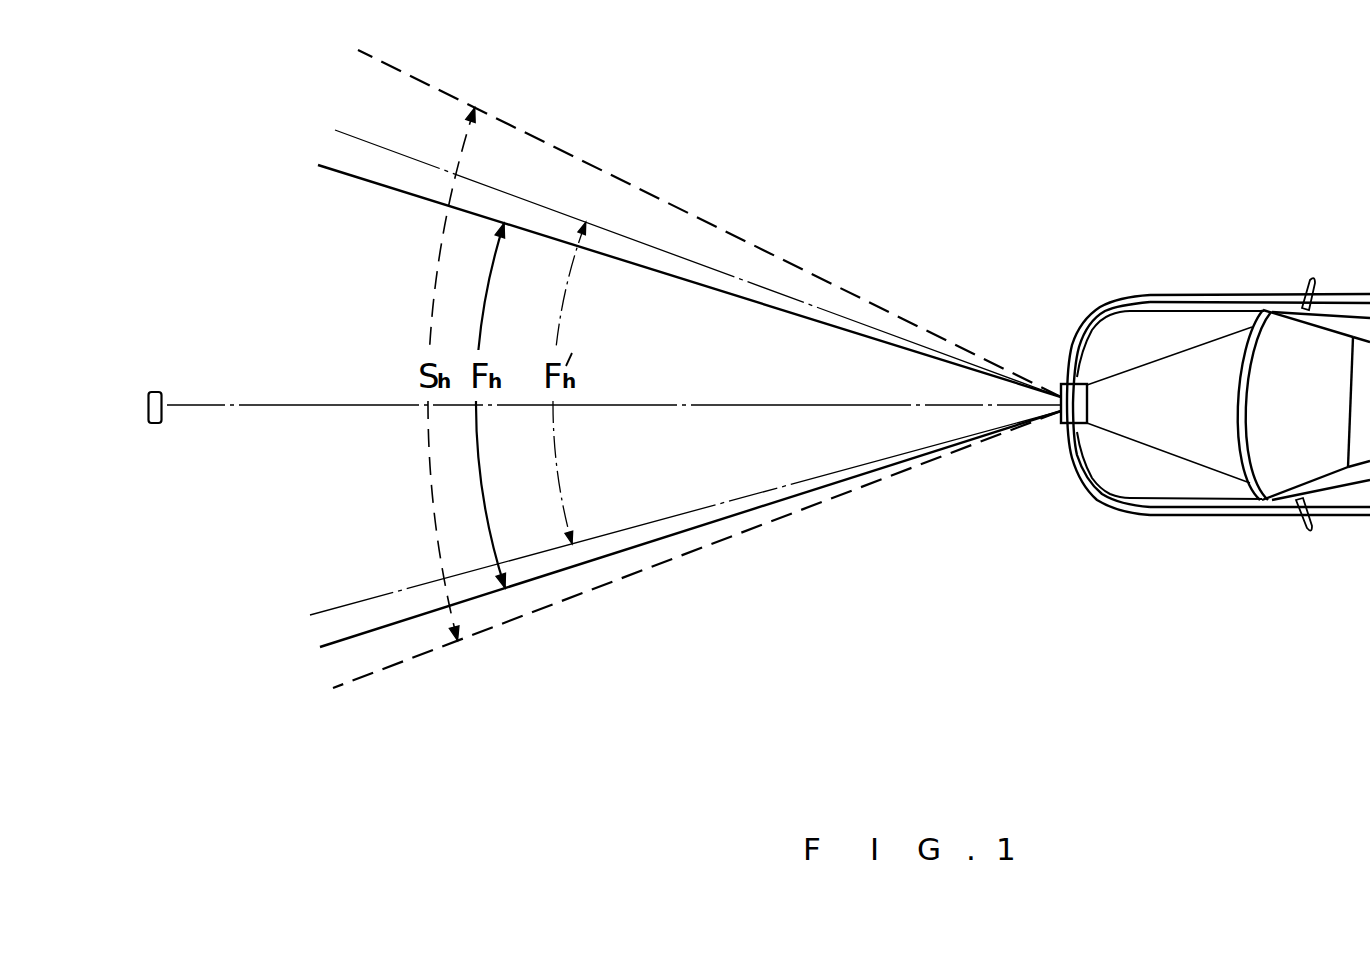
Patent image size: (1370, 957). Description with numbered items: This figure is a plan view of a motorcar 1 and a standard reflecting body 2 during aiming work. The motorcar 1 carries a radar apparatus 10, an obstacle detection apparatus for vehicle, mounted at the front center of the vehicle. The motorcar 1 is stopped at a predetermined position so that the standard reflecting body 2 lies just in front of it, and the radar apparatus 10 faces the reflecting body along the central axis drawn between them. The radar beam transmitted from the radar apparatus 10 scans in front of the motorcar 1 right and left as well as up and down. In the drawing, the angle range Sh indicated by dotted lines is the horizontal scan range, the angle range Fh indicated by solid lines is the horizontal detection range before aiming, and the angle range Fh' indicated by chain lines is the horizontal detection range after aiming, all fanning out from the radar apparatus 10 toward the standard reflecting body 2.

The motorcar 1 is at (1222, 296).
The standard reflecting body 2 is at (154, 425).
The radar apparatus 10 is at (1062, 388).